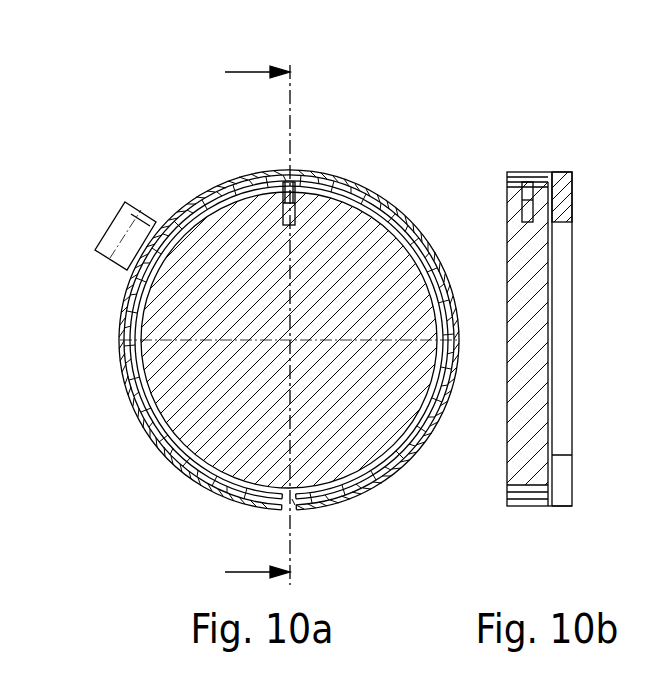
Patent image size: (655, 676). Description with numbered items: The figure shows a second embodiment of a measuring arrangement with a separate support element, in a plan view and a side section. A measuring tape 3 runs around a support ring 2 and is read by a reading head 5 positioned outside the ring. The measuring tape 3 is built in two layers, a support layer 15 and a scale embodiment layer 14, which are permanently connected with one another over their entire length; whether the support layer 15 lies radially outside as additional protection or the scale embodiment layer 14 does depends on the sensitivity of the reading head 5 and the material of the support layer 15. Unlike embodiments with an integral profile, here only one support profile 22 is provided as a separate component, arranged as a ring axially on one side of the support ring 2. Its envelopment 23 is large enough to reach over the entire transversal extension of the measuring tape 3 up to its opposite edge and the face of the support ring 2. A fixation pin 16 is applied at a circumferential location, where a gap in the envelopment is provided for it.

In FIG. 10A, the support ring 2 is at (218, 186).
In FIG. 10B, the support ring 2 is at (528, 405).
In FIG. 10B, the measuring tape 3 is at (492, 487).
In FIG. 10A, the reading head 5 is at (104, 228).
In FIG. 10A, the scale embodiment layer 14 is at (247, 182).
In FIG. 10A, the support layer 15 is at (368, 205).
In FIG. 10A, the fixation pin 16 is at (292, 180).
In FIG. 10B, the support profile 22 is at (562, 168).
In FIG. 10B, the envelopment 23 is at (563, 510).